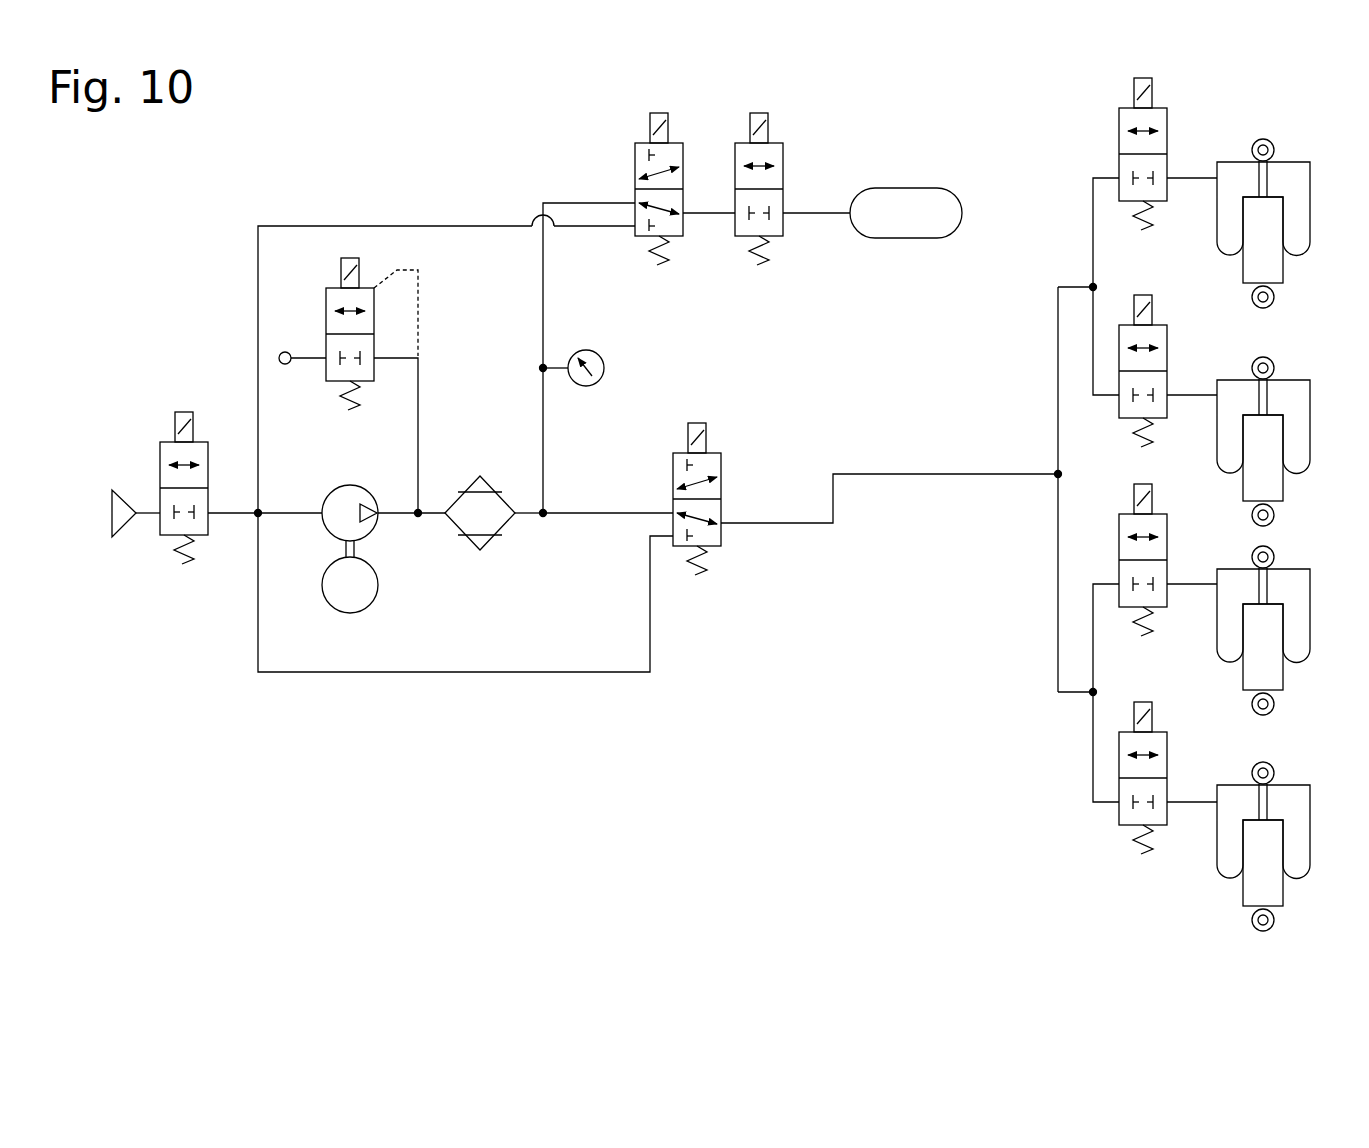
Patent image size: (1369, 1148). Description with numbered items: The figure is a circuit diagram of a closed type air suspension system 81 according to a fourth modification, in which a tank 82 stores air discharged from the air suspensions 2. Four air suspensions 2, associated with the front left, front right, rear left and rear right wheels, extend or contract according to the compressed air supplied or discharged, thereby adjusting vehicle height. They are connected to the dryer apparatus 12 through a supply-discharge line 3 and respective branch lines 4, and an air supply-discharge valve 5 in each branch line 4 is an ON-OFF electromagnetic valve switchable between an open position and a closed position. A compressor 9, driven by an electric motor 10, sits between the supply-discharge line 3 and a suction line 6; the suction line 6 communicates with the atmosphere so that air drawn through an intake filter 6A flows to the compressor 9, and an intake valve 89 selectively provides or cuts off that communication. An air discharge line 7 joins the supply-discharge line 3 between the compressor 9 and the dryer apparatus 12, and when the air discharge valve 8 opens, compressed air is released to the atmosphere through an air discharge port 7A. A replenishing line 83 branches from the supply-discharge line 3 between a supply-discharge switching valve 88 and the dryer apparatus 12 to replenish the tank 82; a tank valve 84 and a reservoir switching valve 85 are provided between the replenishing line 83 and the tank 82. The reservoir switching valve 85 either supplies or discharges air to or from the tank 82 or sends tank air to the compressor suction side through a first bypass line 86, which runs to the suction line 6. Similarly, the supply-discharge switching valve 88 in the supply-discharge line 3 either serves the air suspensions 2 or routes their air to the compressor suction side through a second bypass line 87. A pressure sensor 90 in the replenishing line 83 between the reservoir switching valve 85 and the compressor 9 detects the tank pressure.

The air suspension 2 is at (1290, 162).
The supply-discharge line 3 is at (595, 511).
The branch line 4 is at (1092, 222).
The air supply-discharge valve 5 is at (1160, 108).
The suction line 6 is at (255, 522).
The intake filter 6A is at (118, 490).
The air discharge line 7 is at (420, 410).
The air discharge port 7A is at (285, 366).
The air discharge valve 8 is at (331, 287).
The compressor 9 is at (349, 485).
The electric motor 10 is at (349, 614).
The dryer apparatus 12 is at (505, 528).
The air suspension system 81 is at (515, 168).
The tank 82 is at (909, 187).
The replenishing line 83 is at (545, 285).
The tank valve 84 is at (772, 142).
The reservoir switching valve 85 is at (672, 142).
The first bypass line 86 is at (452, 225).
The second bypass line 87 is at (515, 674).
The supply-discharge switching valve 88 is at (716, 452).
The intake valve 89 is at (200, 440).
The pressure sensor 90 is at (605, 368).